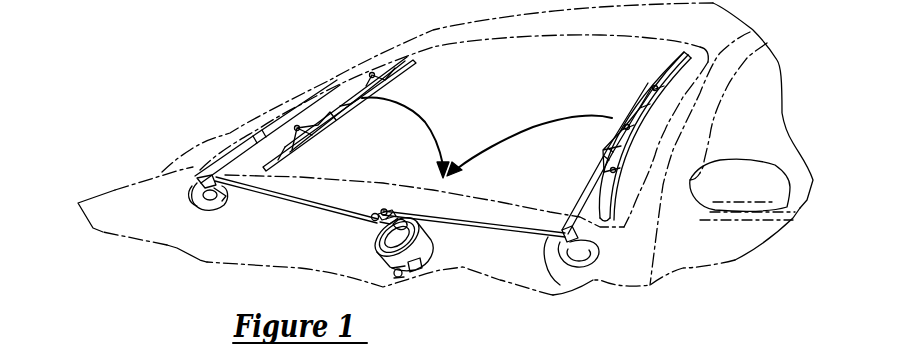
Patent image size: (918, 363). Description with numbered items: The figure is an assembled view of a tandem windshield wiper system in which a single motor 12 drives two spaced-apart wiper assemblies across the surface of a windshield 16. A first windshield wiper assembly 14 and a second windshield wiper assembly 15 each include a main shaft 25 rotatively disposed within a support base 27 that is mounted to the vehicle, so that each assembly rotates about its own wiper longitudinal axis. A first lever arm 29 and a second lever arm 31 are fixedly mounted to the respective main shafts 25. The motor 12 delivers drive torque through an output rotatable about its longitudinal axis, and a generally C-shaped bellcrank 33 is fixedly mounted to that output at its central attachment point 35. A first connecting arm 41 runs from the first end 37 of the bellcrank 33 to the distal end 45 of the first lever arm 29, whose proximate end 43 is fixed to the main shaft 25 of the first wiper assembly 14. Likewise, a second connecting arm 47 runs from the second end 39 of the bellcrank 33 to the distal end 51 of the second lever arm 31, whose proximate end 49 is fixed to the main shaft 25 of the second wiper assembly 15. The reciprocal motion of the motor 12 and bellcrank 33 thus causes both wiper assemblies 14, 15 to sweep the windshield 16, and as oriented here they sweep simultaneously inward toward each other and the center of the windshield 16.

The motor 12 is at (430, 265).
The first windshield wiper assembly 14 is at (657, 82).
The second windshield wiper assembly 15 is at (398, 78).
The windshield 16 is at (553, 70).
The main shaft 25 is at (197, 160).
The support base 27 is at (210, 207).
The first lever arm 29 is at (555, 237).
The second lever arm 31 is at (220, 193).
The bellcrank 33 is at (366, 208).
The central attachment point 35 is at (378, 206).
The first end 37 is at (393, 206).
The second end 39 is at (374, 213).
The first connecting arm 41 is at (455, 215).
The proximate end 43 is at (555, 238).
The distal end 45 is at (560, 230).
The second connecting arm 47 is at (300, 206).
The proximate end 49 is at (193, 193).
The distal end 51 is at (232, 165).